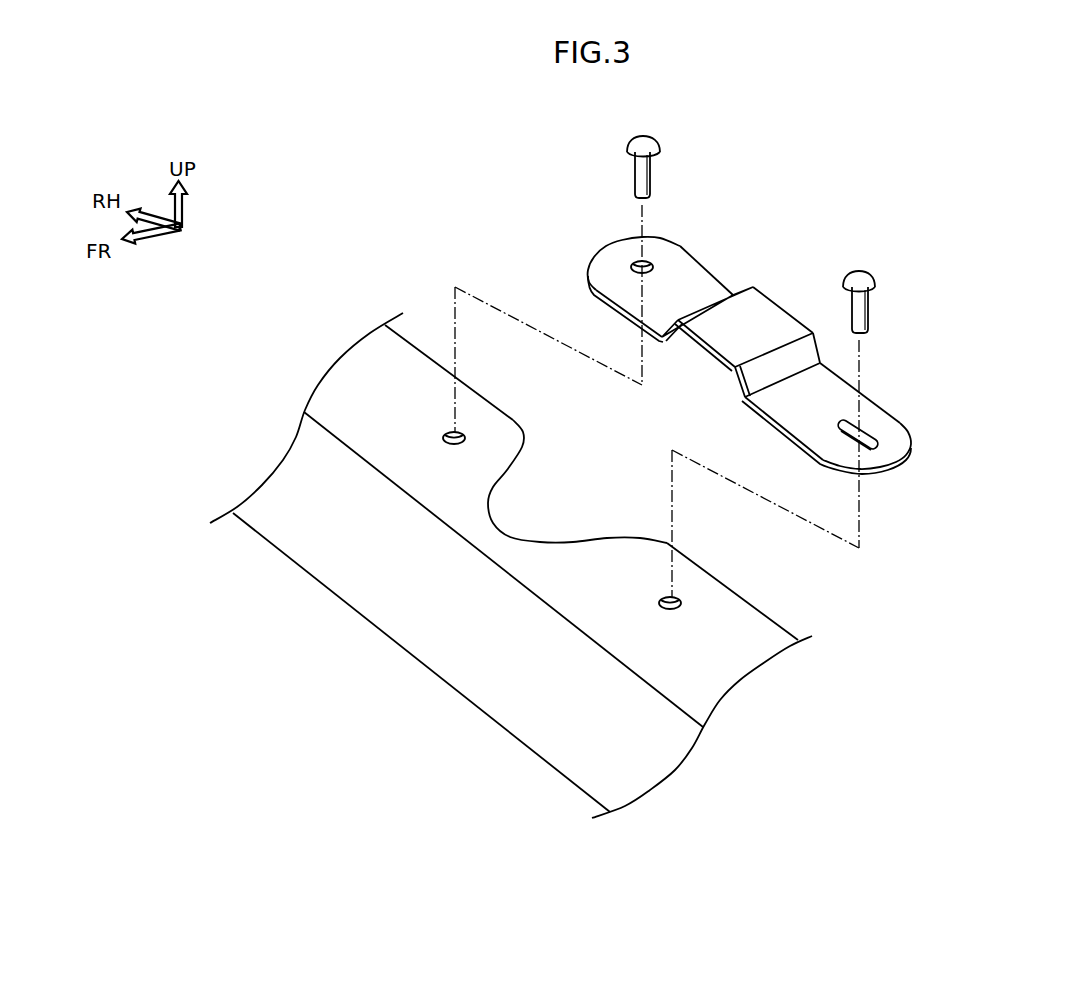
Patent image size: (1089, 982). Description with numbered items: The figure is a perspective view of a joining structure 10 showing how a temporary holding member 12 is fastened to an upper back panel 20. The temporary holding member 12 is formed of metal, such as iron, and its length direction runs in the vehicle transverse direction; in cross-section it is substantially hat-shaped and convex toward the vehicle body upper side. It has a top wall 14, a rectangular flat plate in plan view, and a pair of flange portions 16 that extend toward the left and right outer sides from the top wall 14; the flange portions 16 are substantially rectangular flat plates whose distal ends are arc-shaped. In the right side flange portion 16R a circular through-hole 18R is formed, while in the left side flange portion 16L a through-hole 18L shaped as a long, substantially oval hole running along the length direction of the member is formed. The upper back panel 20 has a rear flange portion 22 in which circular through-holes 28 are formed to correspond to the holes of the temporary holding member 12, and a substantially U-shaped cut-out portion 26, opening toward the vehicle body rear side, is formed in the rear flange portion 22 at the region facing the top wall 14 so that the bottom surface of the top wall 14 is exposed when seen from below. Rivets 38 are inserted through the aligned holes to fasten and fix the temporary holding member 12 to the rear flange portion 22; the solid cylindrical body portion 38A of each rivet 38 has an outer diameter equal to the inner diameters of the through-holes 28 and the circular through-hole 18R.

The fastening structure 10 is at (977, 225).
The temporary holding member 12 is at (765, 291).
The top wall 14 is at (755, 332).
The flange portions 16 is at (755, 321).
The right side flange portion 16R is at (598, 260).
The left side flange portion 16L is at (891, 450).
The through-hole 18R is at (657, 266).
The through-hole 18L is at (900, 422).
The upper back panel 20 is at (315, 384).
The rear flange portion 22 is at (752, 635).
The cut-out portion 26 is at (510, 473).
The through-holes 28 is at (466, 436).
The rivet 38 is at (645, 144).
The body portion 38A is at (636, 178).